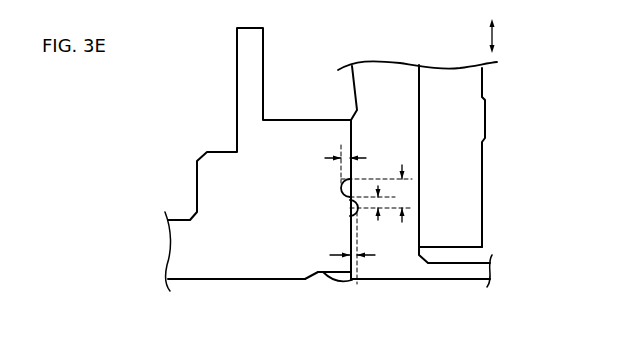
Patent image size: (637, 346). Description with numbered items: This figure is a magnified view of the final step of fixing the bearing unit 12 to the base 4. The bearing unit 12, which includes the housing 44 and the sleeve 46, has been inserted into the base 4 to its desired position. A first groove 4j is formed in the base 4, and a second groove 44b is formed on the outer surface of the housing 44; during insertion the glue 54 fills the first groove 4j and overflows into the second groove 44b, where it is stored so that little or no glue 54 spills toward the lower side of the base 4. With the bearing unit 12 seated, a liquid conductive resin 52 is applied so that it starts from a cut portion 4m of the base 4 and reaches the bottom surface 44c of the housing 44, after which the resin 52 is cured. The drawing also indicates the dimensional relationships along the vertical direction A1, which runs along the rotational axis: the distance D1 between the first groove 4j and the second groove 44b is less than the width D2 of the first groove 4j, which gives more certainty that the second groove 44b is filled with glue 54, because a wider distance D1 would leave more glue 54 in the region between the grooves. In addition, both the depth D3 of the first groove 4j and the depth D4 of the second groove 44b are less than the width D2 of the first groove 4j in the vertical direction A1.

The base 4 is at (183, 238).
The first groove 4j is at (341, 190).
The cut portion 4m is at (322, 276).
The bearing unit 12 is at (472, 35).
The housing 44 is at (397, 80).
The second groove 44b is at (355, 217).
The bottom surface 44c is at (436, 282).
The sleeve 46 is at (446, 78).
The liquid conductive resin 52 is at (337, 282).
The glue 54 is at (344, 180).
The vertical direction A1 is at (508, 36).
The distance D1 is at (389, 184).
The width D2 is at (410, 170).
The depth D3 is at (341, 150).
The depth D4 is at (358, 263).